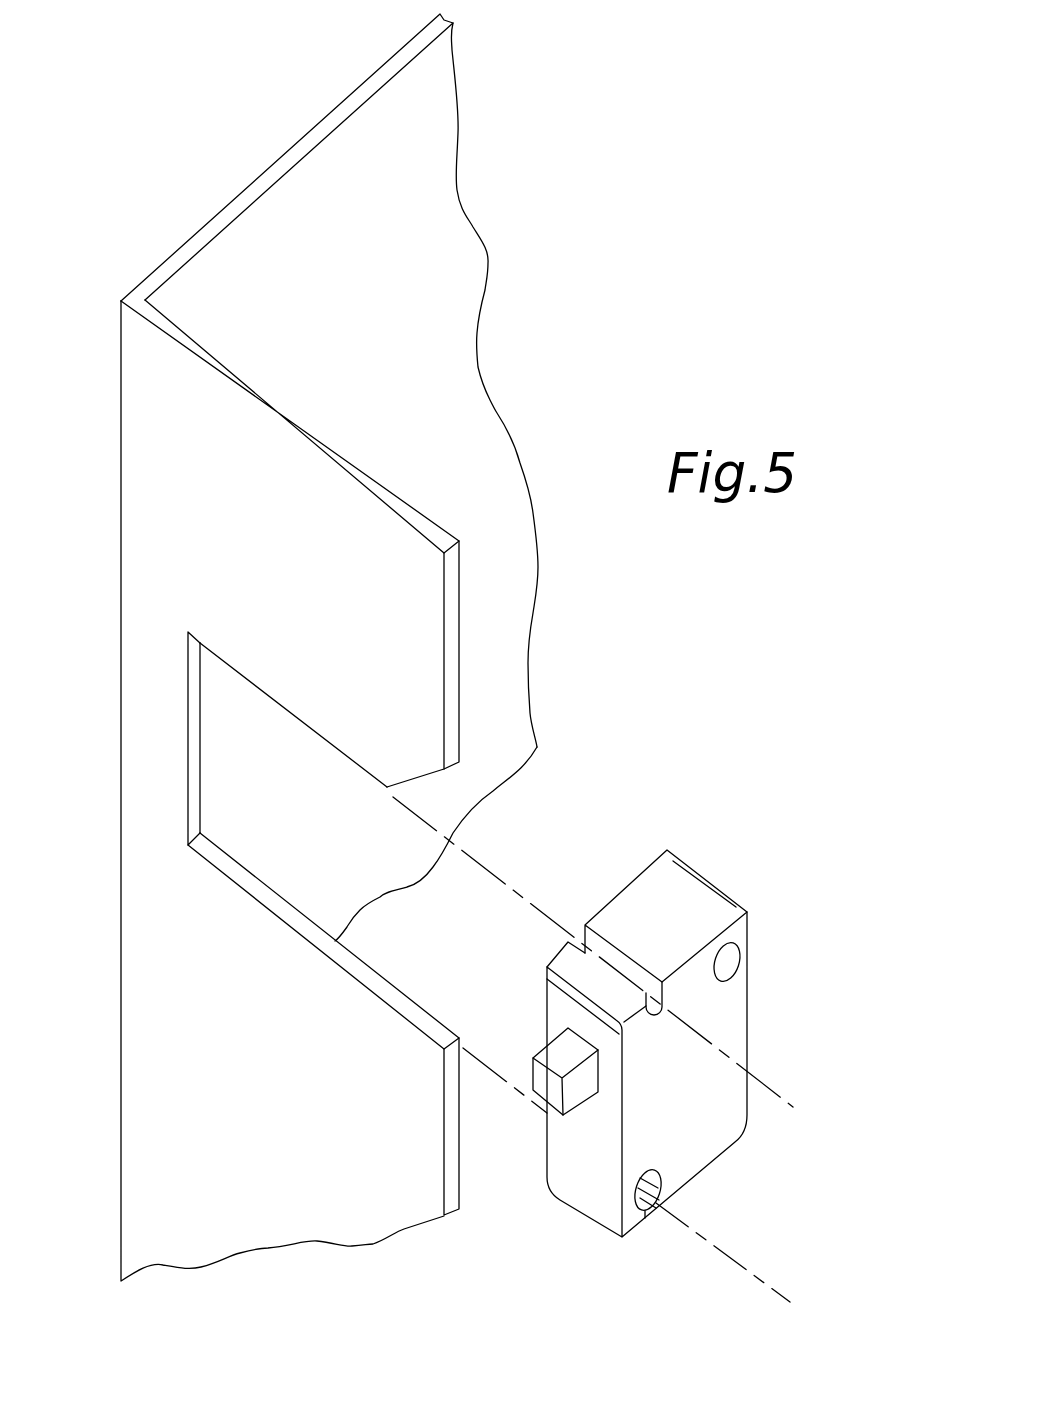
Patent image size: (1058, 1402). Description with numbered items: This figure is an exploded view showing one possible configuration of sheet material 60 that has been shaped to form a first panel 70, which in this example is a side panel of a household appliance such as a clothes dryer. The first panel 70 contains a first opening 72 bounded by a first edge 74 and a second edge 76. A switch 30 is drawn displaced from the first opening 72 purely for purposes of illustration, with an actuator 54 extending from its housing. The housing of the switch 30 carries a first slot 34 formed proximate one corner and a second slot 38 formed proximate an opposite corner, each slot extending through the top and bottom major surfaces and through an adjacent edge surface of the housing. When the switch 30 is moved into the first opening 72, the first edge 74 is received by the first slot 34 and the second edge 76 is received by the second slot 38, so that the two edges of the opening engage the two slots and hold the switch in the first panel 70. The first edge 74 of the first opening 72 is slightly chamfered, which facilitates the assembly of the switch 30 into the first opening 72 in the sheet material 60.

The switch 30 is at (730, 1015).
The first slot 34 is at (652, 1217).
The second slot 38 is at (605, 942).
The actuator 54 is at (548, 1068).
The sheet material 60 is at (318, 1206).
The first panel 70 is at (260, 223).
The first opening 72 is at (230, 738).
The first edge 74 is at (363, 770).
The second edge 76 is at (359, 972).